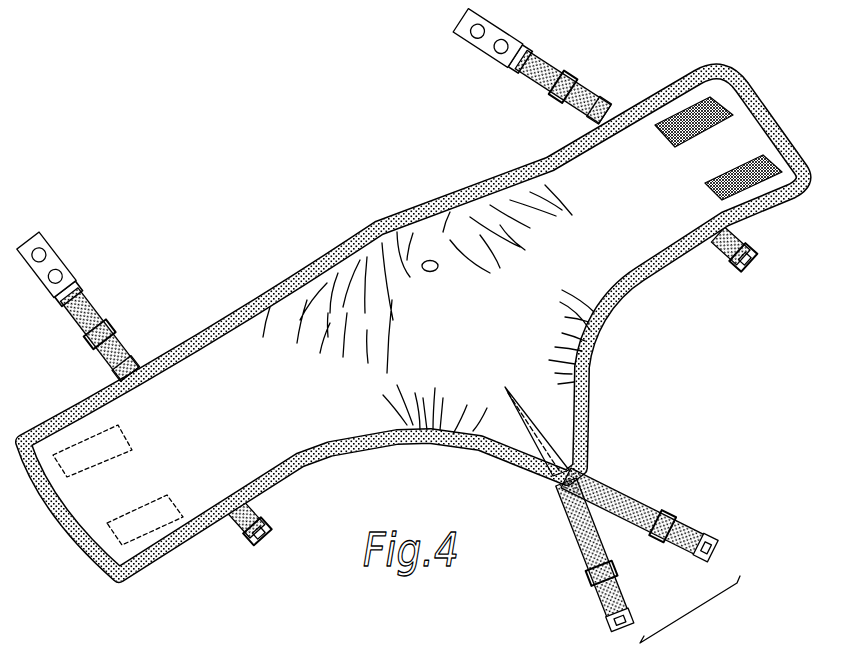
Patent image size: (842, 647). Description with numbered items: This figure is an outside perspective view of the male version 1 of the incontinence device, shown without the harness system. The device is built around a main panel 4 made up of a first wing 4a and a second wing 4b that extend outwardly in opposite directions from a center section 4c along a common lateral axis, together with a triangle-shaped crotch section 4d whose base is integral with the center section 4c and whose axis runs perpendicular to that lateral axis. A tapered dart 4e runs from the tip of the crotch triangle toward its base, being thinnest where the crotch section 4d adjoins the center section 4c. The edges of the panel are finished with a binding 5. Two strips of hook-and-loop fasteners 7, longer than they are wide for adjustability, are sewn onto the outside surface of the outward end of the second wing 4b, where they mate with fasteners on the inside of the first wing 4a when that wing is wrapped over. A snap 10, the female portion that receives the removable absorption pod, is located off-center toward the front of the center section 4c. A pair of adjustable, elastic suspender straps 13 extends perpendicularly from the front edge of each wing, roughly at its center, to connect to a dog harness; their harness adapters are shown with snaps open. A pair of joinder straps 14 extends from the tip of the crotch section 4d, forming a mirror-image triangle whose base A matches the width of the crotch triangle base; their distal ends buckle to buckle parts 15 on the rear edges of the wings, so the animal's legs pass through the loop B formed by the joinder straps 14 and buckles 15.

The male version of the incontinence device 1 is at (418, 326).
The main panel 4 is at (413, 323).
The first wing 4a is at (110, 487).
The second wing 4b is at (731, 117).
The center section 4c is at (417, 245).
The crotch section 4d is at (554, 423).
The dart 4e is at (548, 452).
The binding 5 is at (61, 432).
The hook-and-loop fasteners 7 is at (712, 117).
The snap 10 is at (430, 260).
The suspender straps 13 is at (83, 300).
The joinder straps 14 is at (640, 498).
The buckle parts 15 is at (263, 541).
The base of the triangle formed by the joinder straps A is at (690, 609).
The loop formed by the joinder straps and buckles B is at (405, 497).